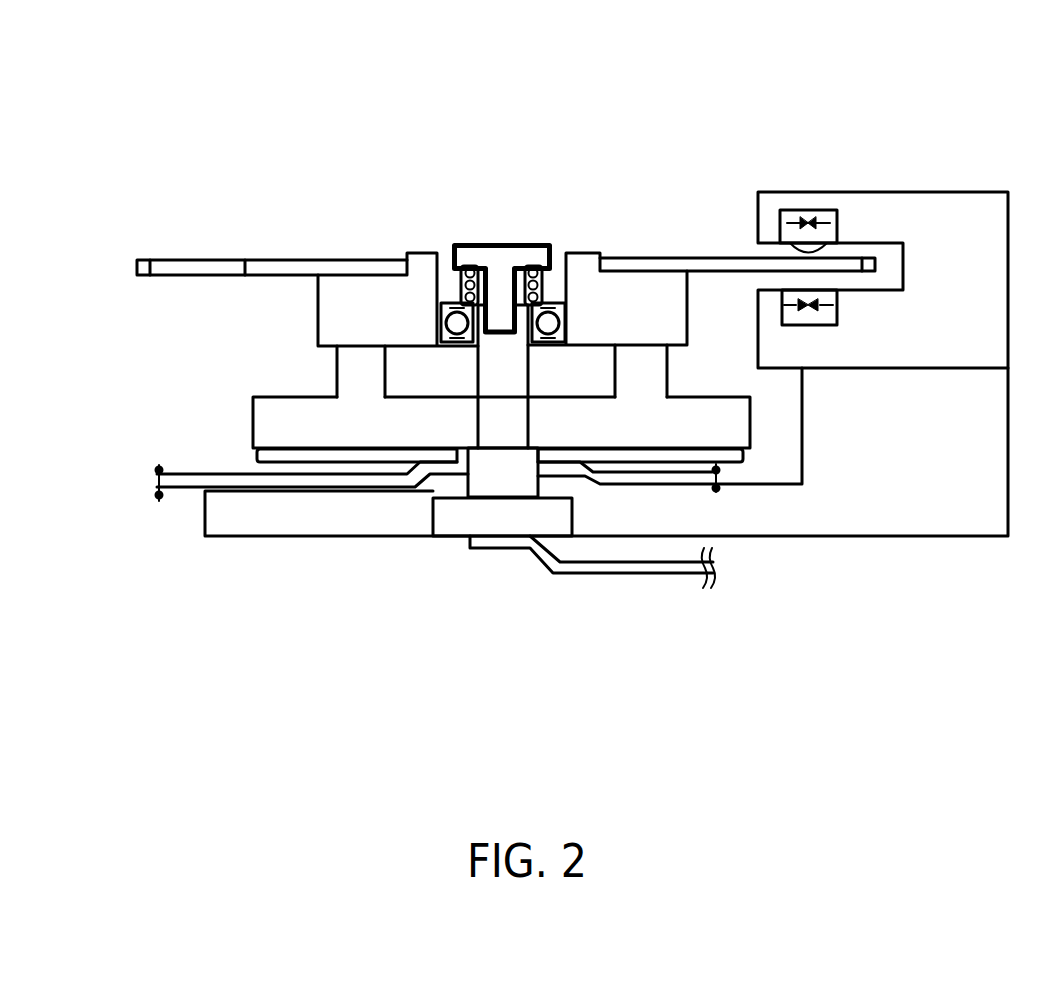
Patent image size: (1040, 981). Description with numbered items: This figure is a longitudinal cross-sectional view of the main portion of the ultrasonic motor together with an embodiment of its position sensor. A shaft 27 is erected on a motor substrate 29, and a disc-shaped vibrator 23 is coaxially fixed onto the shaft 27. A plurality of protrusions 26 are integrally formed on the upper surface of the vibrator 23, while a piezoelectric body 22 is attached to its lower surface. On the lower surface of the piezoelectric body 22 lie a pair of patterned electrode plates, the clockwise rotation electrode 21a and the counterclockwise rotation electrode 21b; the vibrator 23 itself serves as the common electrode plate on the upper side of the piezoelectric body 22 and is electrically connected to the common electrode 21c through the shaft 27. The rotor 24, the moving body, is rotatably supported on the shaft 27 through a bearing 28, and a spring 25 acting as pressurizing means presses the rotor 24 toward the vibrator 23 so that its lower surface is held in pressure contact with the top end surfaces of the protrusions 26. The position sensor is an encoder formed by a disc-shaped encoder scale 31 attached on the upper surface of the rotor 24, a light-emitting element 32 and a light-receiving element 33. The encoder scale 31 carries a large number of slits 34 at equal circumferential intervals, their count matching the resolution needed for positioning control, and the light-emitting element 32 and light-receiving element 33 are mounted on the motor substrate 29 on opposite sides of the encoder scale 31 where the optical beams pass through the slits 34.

The clockwise rotation electrode 21a is at (197, 490).
The counterclockwise rotation electrode 21b is at (680, 480).
The common electrode 21c is at (638, 567).
The piezoelectric body 22 is at (257, 458).
The disc-shaped vibrator 23 is at (267, 418).
The rotor 24 is at (348, 288).
The spring 25 is at (462, 286).
The protrusions 26 is at (350, 378).
The shaft 27 is at (498, 484).
The bearing 28 is at (564, 292).
The motor substrate 29 is at (270, 528).
The disc-shaped encoder scale 31 is at (657, 258).
The light-emitting element 32 is at (837, 212).
The light-receiving element 33 is at (837, 307).
The slits 34 is at (768, 252).